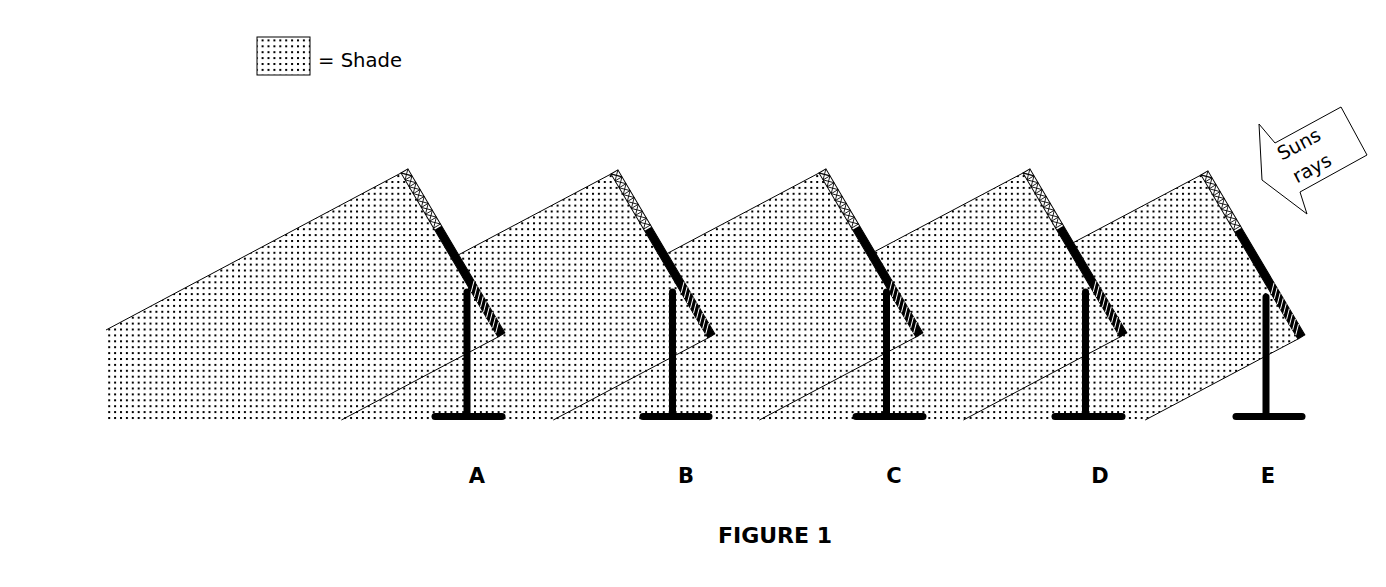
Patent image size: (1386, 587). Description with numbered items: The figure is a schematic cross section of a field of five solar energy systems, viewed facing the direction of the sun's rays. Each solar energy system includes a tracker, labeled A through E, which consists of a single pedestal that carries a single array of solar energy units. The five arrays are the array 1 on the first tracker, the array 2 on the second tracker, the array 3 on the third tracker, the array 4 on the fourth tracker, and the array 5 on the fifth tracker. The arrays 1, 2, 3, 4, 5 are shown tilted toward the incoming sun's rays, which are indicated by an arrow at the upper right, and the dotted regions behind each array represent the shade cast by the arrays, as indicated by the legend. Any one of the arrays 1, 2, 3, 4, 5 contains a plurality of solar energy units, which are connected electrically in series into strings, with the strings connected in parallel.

The array 1 is at (449, 276).
The array 2 is at (658, 276).
The array 3 is at (863, 276).
The array 4 is at (1067, 276).
The array 5 is at (1246, 276).